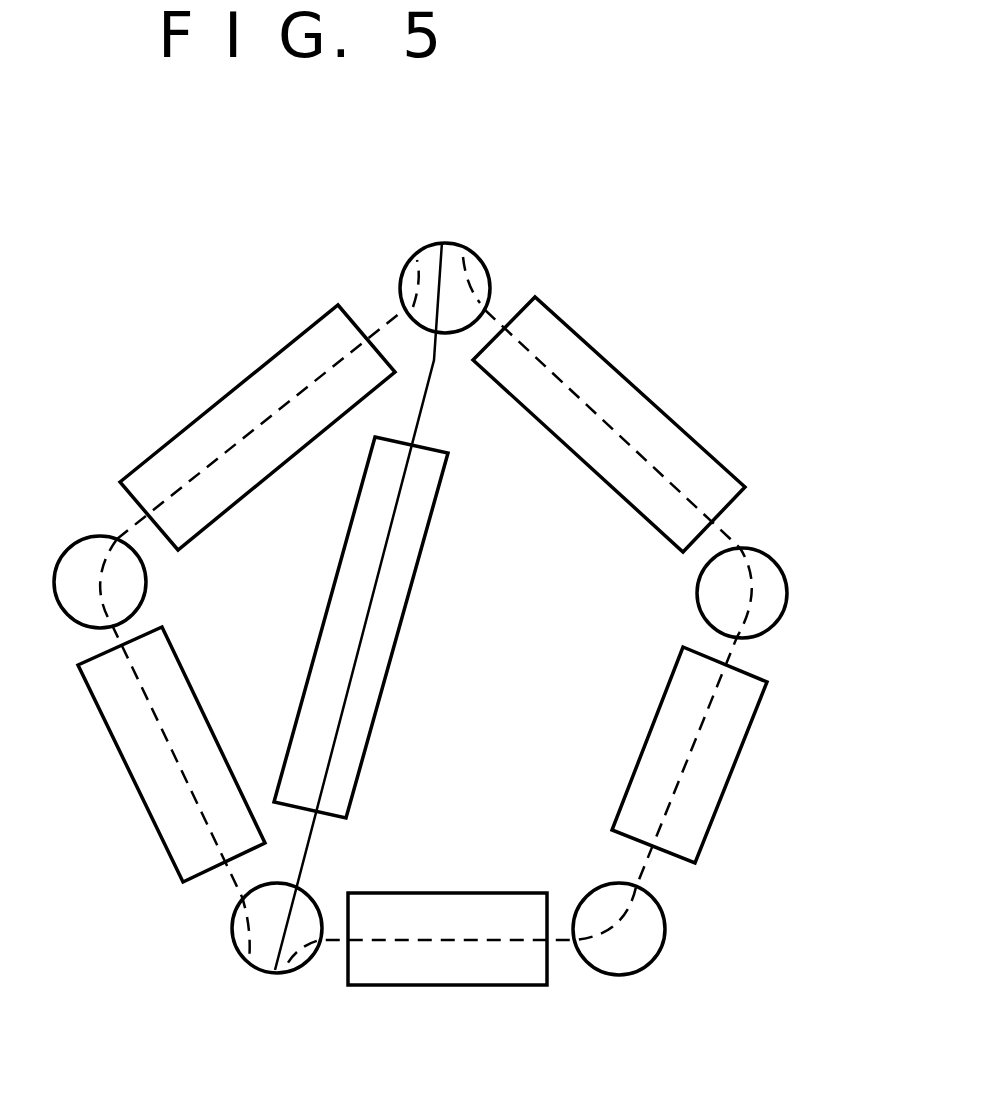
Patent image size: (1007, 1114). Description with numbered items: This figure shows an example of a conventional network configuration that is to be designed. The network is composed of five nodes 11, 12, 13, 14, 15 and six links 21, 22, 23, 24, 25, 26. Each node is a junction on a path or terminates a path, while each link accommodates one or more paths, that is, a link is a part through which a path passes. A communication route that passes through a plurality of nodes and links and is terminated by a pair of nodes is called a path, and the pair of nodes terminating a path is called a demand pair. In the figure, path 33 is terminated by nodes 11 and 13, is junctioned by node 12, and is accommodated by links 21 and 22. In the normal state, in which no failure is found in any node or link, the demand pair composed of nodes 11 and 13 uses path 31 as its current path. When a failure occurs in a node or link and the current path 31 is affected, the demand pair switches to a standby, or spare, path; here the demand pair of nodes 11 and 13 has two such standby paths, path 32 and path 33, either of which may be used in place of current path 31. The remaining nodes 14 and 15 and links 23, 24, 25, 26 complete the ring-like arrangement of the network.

The node 11 is at (492, 278).
The node 12 is at (148, 582).
The node 13 is at (303, 967).
The node 14 is at (643, 973).
The node 15 is at (788, 592).
The link 21 is at (233, 385).
The link 22 is at (147, 805).
The link 23 is at (452, 987).
The link 24 is at (730, 780).
The link 25 is at (647, 385).
The link 26 is at (402, 605).
The current path 31 is at (446, 245).
The standby path 32 is at (487, 255).
The standby path 33 is at (400, 263).